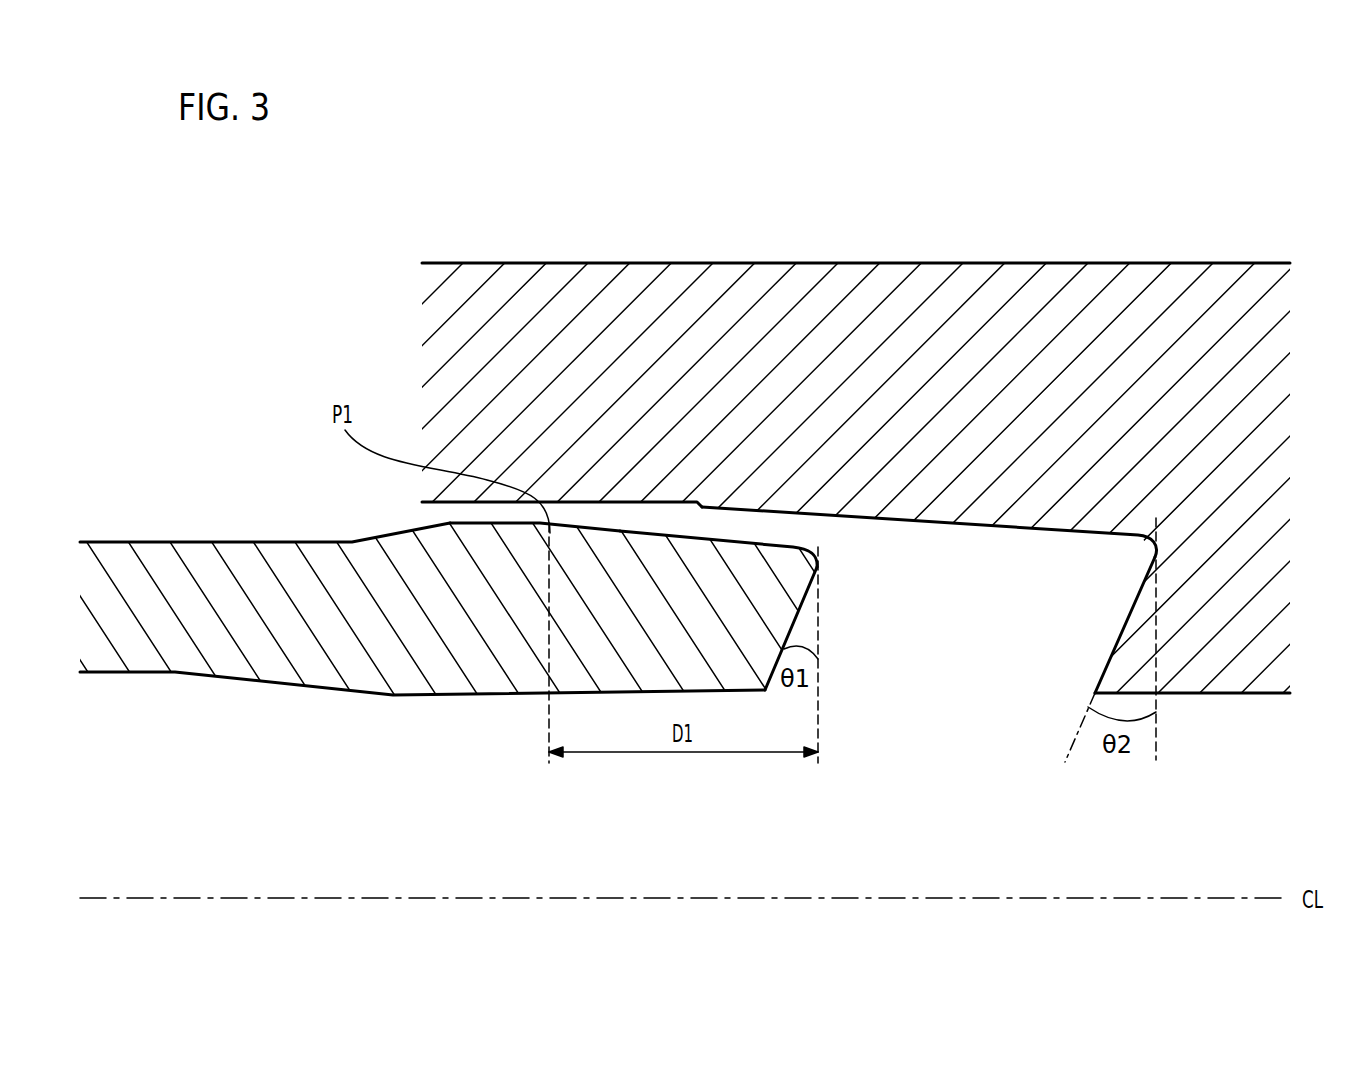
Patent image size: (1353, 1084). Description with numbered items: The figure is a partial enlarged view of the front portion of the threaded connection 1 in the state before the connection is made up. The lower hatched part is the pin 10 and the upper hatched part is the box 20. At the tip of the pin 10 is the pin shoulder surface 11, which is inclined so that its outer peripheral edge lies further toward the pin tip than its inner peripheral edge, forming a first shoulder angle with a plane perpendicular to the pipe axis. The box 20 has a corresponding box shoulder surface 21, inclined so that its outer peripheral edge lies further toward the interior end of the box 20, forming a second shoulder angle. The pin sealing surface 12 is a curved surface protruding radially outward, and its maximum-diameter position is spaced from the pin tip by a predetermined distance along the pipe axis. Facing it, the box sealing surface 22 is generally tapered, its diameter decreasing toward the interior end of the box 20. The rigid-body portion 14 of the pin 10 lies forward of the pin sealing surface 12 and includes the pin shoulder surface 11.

The threaded connection 1 is at (1207, 152).
The pin 10 is at (456, 486).
The pin shoulder surface 11 is at (798, 615).
The pin sealing surface 12 is at (566, 527).
The rigid-body portion 14 is at (722, 570).
The box 20 is at (693, 465).
The box shoulder surface 21 is at (1128, 617).
The box sealing surface 22 is at (885, 521).